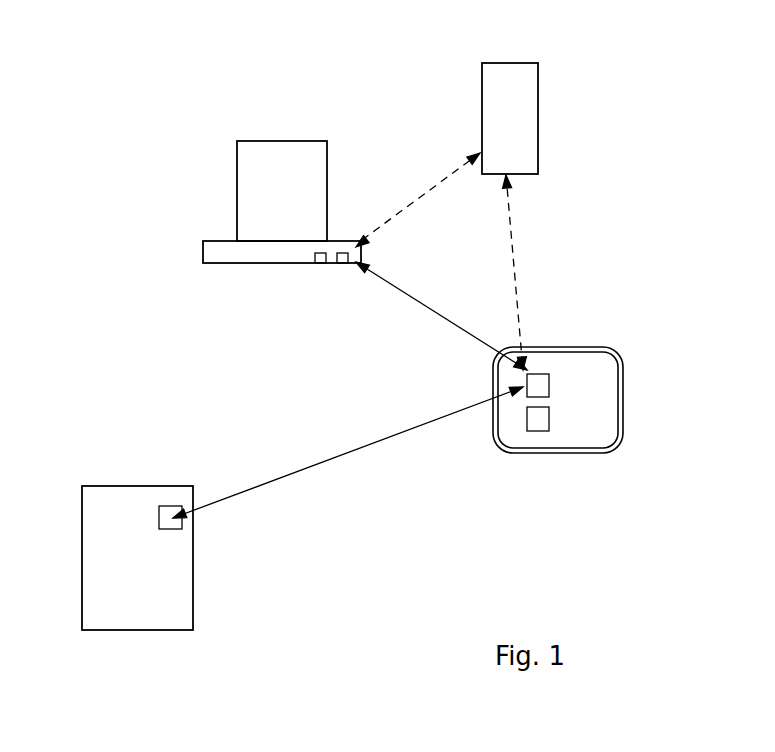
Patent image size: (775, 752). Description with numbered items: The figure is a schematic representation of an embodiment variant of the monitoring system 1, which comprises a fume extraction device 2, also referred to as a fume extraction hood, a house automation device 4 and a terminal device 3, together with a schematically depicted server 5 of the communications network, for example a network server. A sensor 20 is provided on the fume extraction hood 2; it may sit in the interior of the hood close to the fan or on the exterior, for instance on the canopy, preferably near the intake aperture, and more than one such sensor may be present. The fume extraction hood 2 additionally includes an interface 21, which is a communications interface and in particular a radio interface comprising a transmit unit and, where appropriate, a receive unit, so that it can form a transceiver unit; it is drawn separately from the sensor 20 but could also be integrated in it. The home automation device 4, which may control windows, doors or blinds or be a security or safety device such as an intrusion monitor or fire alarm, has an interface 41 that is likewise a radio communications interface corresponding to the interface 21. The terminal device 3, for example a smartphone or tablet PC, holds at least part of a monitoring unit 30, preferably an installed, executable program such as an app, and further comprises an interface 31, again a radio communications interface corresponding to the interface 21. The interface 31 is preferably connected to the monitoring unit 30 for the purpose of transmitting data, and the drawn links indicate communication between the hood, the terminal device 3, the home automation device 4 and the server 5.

The monitoring system 1 is at (662, 193).
The fume extraction device 2 is at (250, 185).
The sensor 20 is at (318, 263).
The interface 21 is at (338, 263).
The server 5 is at (482, 97).
The terminal device 3 is at (593, 408).
The interface 31 is at (537, 385).
The monitoring unit 30 is at (540, 418).
The house automation device 4 is at (115, 525).
The interface 41 is at (168, 530).